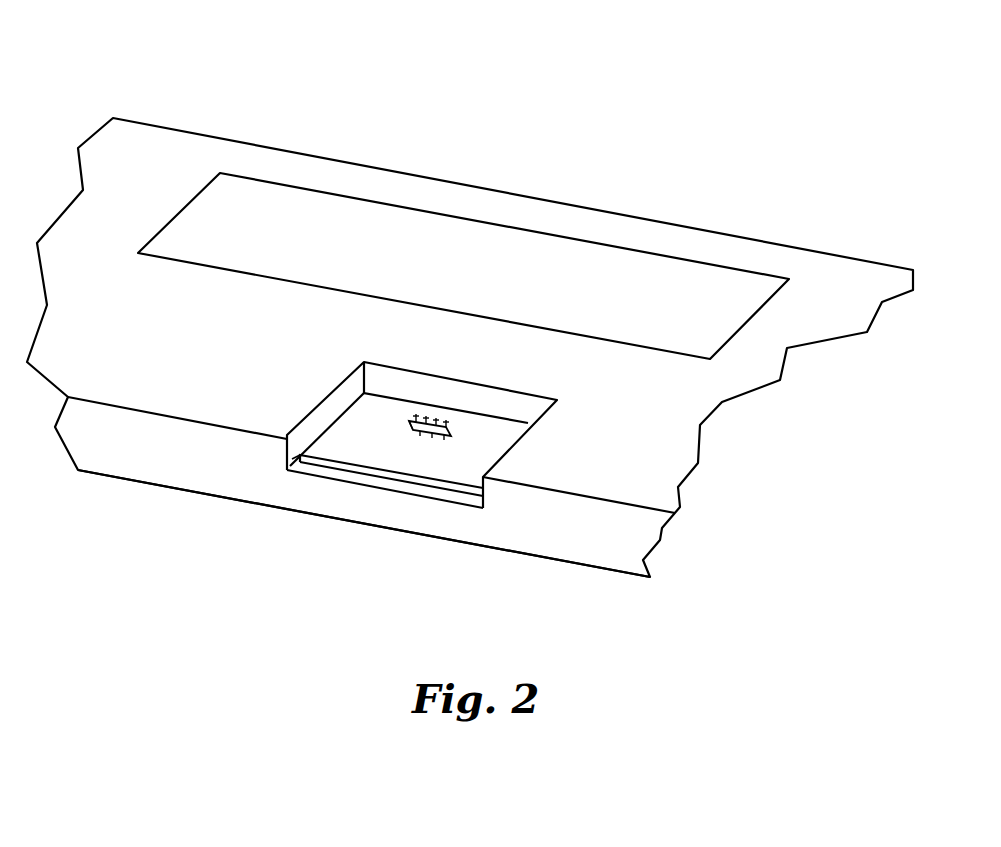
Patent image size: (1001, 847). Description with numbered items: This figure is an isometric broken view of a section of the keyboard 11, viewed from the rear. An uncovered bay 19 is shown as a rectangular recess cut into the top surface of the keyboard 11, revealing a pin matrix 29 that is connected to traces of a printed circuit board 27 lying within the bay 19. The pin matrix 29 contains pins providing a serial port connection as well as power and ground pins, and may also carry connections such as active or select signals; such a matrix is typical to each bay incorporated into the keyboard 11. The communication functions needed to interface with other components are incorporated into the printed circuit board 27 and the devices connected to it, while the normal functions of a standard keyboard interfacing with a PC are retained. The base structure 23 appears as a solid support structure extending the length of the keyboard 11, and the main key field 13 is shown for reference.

The keyboard 11 is at (423, 140).
The main key field 13 is at (493, 258).
The bay 19 is at (460, 522).
The base structure 23 is at (113, 458).
The printed circuit board 27 is at (413, 463).
The pin matrix 29 is at (407, 424).